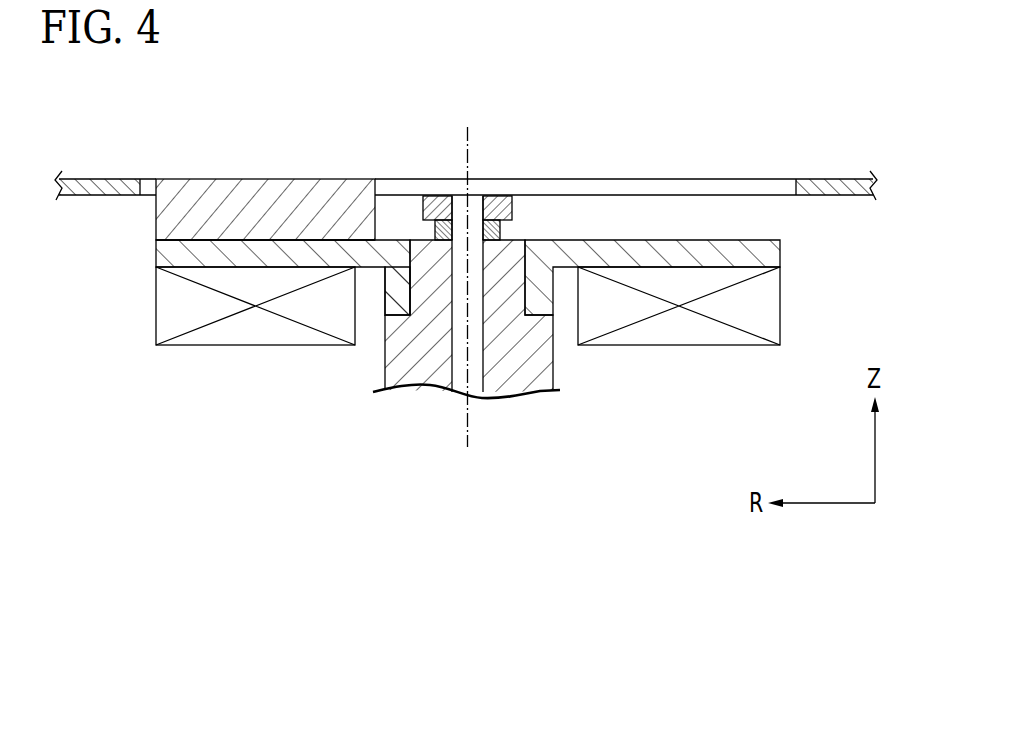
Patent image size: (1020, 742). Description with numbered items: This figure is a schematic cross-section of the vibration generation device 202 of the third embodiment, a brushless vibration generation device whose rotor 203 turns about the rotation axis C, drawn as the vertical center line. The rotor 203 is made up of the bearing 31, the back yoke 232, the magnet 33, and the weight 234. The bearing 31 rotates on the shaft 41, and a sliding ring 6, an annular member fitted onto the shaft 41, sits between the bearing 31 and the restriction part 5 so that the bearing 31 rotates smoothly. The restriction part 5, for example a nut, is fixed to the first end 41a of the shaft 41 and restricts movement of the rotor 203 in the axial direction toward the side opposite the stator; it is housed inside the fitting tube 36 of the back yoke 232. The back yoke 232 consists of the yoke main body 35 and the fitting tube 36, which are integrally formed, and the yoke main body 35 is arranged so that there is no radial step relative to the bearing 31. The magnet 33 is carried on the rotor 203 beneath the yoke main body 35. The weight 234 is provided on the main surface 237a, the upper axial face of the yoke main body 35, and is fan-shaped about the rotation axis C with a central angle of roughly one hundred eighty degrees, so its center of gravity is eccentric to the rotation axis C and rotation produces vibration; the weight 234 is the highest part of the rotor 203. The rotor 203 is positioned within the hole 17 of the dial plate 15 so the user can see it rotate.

The dial plate 15 is at (98, 185).
The hole 17 is at (588, 180).
The weight 234 is at (263, 190).
The main surface 237a is at (197, 240).
The yoke main body 35 is at (158, 254).
The fitting tube 36 is at (388, 292).
The magnet 33 is at (255, 338).
The bearing 31 is at (517, 393).
The shaft 41 is at (457, 315).
The first end 41a is at (460, 195).
The restriction part 5 is at (497, 200).
The sliding ring 6 is at (500, 233).
The back yoke 232 is at (678, 232).
The rotor 203 is at (800, 302).
The vibration generation device 202 is at (800, 232).
The rotation axis C is at (468, 303).